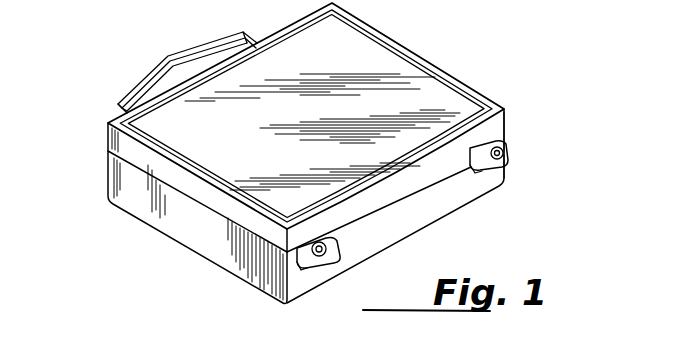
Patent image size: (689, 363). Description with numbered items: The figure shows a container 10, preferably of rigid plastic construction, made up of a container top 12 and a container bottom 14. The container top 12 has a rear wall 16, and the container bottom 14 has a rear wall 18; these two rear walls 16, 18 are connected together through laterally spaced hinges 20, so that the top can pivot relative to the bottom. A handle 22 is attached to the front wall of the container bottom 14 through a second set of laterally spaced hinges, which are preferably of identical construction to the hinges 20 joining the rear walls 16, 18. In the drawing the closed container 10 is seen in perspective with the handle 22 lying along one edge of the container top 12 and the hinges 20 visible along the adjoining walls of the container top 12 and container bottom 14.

The container 10 is at (322, 153).
The container top 12 is at (108, 140).
The container bottom 14 is at (105, 190).
The rear wall 16 is at (493, 127).
The rear wall 18 is at (487, 177).
The hinges 20 is at (520, 154).
The handle 22 is at (185, 50).